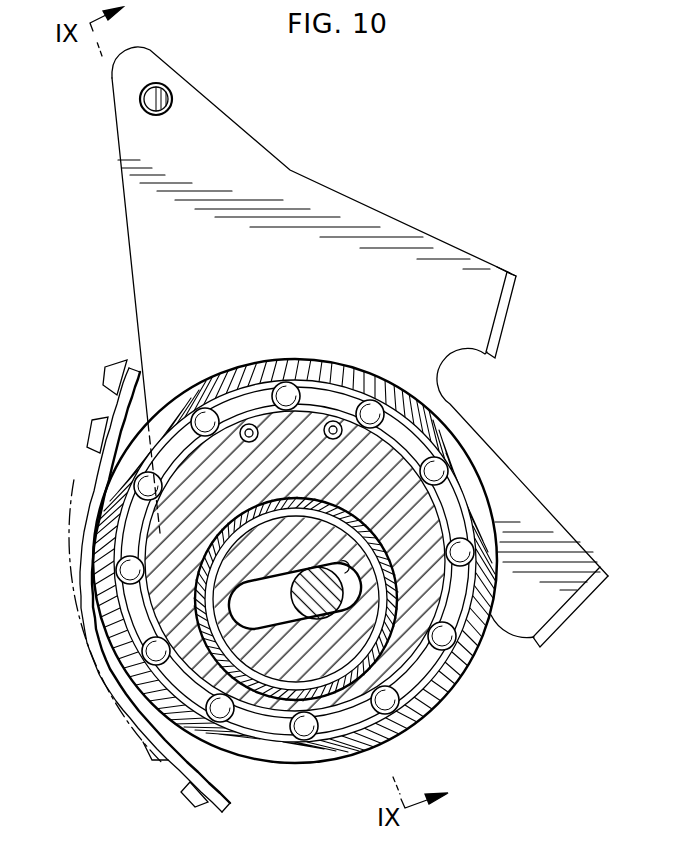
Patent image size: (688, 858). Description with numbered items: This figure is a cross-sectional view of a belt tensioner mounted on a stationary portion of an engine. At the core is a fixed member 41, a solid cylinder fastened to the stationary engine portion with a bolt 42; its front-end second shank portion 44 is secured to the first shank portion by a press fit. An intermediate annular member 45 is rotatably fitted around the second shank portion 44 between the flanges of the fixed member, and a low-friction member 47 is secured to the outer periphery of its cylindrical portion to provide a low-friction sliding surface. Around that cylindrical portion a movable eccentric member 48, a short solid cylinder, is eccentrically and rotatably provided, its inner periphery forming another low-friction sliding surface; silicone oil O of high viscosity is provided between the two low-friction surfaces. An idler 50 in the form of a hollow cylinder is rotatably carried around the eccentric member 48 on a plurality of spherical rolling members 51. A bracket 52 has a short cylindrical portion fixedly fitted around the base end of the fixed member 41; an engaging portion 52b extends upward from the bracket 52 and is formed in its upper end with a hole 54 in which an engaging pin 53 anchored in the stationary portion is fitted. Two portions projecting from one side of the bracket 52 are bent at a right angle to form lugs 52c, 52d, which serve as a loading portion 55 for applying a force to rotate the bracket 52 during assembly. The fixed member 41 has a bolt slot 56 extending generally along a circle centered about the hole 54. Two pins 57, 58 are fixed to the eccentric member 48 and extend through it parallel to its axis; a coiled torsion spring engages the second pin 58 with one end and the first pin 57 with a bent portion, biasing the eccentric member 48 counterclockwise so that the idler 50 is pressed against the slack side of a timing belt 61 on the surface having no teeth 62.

The fixed member 41 is at (314, 669).
The bolt 42 is at (292, 597).
The second shank portion 44 is at (336, 661).
The intermediate annular member 45 is at (368, 522).
The low-friction member 47 is at (384, 549).
The movable eccentric member 48 is at (433, 587).
The idler 50 is at (261, 362).
The spherical rolling members 51 is at (289, 382).
The bracket 52 is at (337, 212).
The engaging portion 52b is at (127, 176).
The lug 52c is at (494, 322).
The lug 52d is at (552, 634).
The engaging pin 53 is at (165, 89).
The hole 54 is at (139, 113).
The loading portion 55 is at (512, 263).
The bolt slot 56 is at (339, 563).
The first pin 57 is at (246, 444).
The second pin 58 is at (338, 441).
The timing belt 61 is at (180, 765).
The teeth 62 is at (110, 365).
The silicone oil O is at (210, 545).